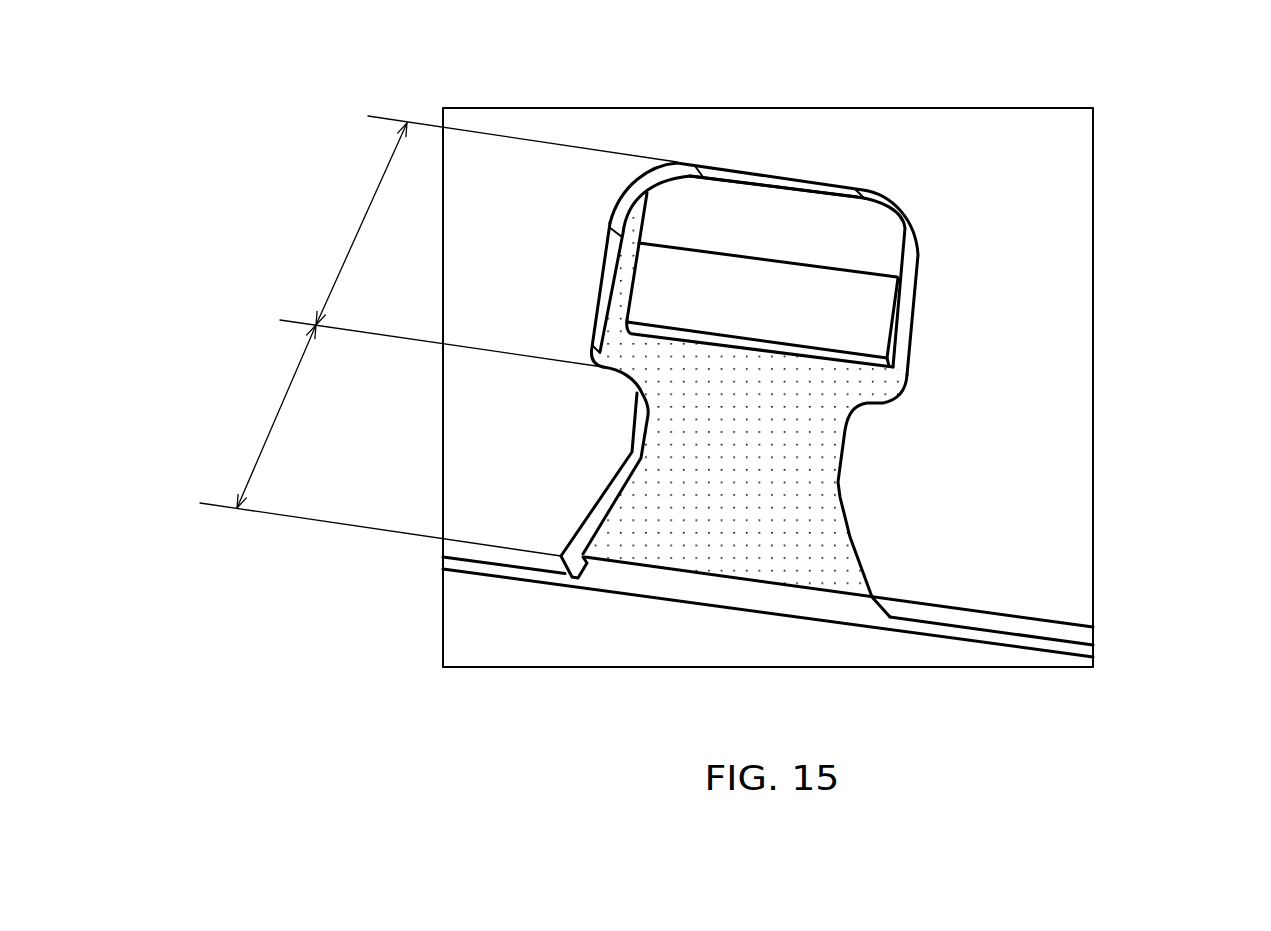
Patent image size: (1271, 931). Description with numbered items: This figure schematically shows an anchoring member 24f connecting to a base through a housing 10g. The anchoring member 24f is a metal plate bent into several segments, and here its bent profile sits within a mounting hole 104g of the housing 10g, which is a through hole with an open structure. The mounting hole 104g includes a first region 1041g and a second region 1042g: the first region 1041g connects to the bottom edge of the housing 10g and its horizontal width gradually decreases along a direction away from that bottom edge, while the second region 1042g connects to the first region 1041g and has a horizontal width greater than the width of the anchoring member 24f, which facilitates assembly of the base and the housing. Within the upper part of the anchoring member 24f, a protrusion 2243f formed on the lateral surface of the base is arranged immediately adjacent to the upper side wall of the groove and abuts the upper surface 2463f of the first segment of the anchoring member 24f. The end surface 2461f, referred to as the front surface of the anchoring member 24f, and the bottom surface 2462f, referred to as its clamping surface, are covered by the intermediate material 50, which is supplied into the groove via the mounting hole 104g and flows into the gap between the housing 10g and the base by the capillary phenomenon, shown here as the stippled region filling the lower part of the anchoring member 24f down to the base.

The anchoring member 24f is at (730, 283).
The protrusion 2243f is at (820, 237).
The upper surface 2463f is at (860, 272).
The end surface 2461f is at (860, 310).
The bottom surface 2462f is at (893, 367).
The housing 10g is at (1055, 383).
The mounting hole 104g is at (790, 448).
The intermediate material 50 is at (790, 533).
The second region 1042g is at (477, 241).
The first region 1041g is at (377, 440).